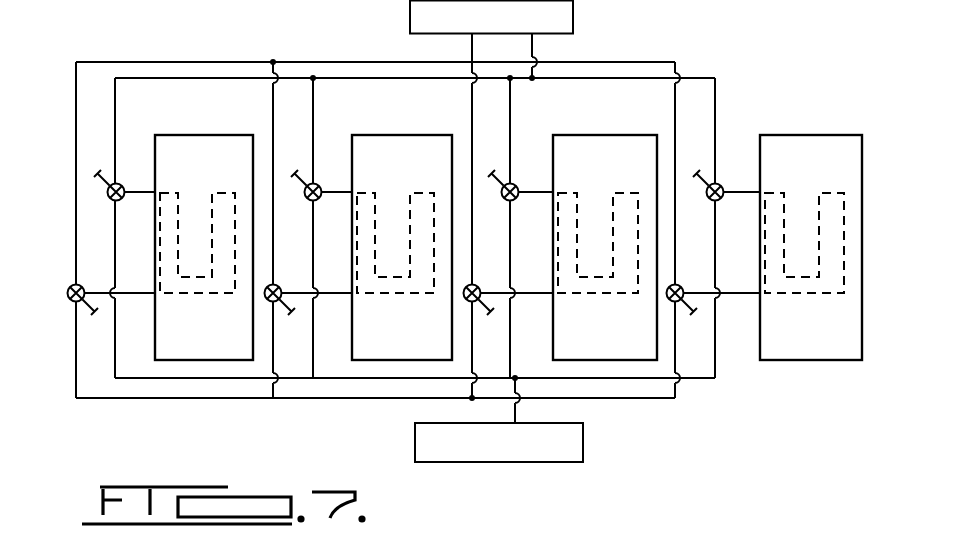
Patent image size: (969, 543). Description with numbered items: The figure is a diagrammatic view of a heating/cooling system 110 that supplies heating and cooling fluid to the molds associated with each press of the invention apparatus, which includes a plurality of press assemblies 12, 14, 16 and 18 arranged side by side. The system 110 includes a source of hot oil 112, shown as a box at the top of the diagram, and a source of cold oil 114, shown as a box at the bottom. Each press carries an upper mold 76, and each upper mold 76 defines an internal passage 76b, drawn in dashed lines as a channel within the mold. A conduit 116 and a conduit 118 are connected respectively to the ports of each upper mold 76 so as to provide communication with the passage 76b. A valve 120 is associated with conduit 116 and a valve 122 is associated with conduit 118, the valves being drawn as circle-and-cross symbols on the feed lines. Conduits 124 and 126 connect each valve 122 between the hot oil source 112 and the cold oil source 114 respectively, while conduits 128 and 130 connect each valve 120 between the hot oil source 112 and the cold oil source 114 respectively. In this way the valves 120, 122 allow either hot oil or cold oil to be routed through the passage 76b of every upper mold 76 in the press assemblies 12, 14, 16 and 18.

The heating/cooling system 110 is at (709, 49).
The source of hot oil 112 is at (410, 14).
The source of cold oil 114 is at (415, 445).
The press assembly 12 is at (148, 264).
The press assembly 14 is at (369, 368).
The press assembly 16 is at (548, 250).
The press assembly 18 is at (825, 348).
The upper mold 76 is at (494, 264).
The passage 76b is at (208, 298).
The conduit 116 is at (138, 298).
The conduit 118 is at (143, 190).
The valve 120 is at (70, 305).
The valve 122 is at (105, 190).
The conduit 124 is at (115, 95).
The conduit 126 is at (112, 213).
The conduit 128 is at (75, 267).
The conduit 130 is at (73, 365).